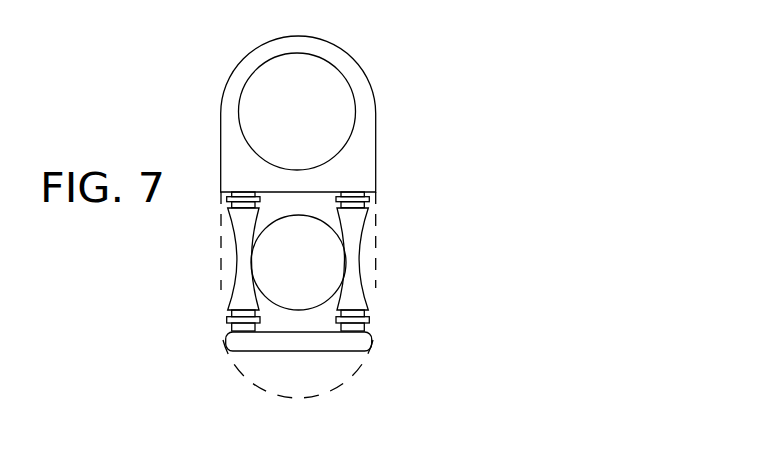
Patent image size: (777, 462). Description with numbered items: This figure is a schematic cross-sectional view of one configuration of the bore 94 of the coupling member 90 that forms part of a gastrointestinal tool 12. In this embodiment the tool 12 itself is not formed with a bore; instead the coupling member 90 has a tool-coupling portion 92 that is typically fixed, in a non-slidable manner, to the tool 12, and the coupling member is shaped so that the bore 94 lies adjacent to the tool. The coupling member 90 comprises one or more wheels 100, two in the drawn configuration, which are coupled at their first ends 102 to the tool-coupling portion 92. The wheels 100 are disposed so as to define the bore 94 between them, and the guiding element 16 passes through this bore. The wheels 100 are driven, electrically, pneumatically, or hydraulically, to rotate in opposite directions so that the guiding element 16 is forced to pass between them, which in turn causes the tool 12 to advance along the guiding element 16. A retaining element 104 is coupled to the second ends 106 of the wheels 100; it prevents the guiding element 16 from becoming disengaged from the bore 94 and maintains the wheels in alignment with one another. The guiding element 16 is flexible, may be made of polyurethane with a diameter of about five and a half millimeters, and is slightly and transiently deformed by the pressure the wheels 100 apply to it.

The coupling member 90 is at (375, 35).
The tool-coupling portion 92 is at (238, 66).
The gastrointestinal tool 12 is at (317, 110).
The bore 94 is at (390, 256).
The guiding element 16 is at (265, 260).
The first ends 102 is at (353, 231).
The wheels 100 is at (238, 299).
The second ends 106 is at (242, 306).
The retaining element 104 is at (315, 337).